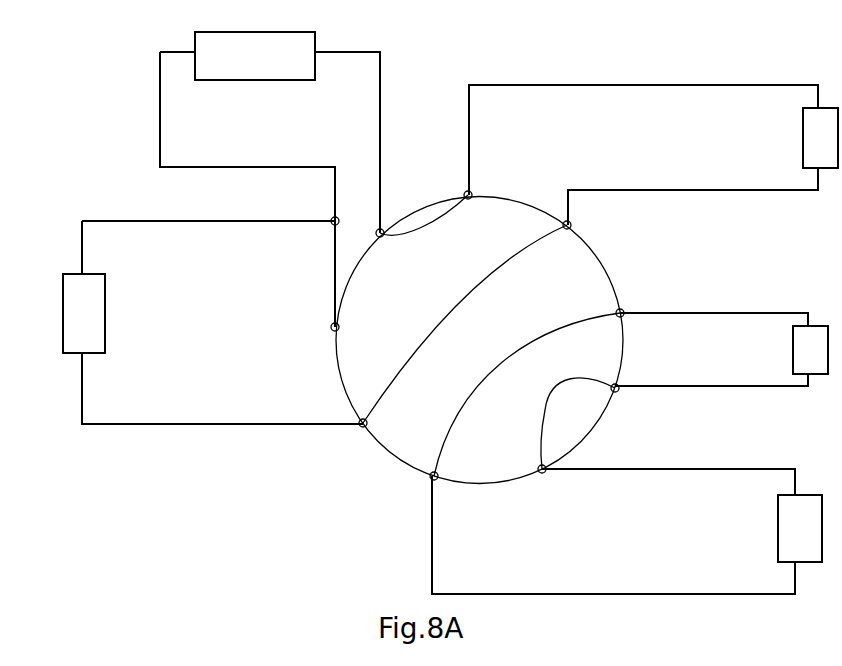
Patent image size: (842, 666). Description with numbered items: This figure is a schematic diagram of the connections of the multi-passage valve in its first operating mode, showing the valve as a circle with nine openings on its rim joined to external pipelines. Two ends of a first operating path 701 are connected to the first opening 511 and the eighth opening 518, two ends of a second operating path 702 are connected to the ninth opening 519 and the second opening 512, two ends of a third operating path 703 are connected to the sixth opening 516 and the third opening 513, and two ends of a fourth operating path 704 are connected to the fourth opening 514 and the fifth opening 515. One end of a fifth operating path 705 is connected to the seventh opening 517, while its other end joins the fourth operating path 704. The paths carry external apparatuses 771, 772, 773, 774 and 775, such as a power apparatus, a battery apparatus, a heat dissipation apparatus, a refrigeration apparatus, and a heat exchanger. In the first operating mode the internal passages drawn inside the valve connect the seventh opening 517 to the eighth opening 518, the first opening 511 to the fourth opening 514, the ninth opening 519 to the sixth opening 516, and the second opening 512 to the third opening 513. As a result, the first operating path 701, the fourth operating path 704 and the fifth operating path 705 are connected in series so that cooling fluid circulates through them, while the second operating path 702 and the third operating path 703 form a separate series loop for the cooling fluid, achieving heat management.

The first opening 511 is at (595, 223).
The second opening 512 is at (639, 404).
The third opening 513 is at (564, 484).
The fourth opening 514 is at (339, 439).
The fifth opening 515 is at (309, 330).
The sixth opening 516 is at (455, 494).
The seventh opening 517 is at (402, 206).
The eighth opening 518 is at (495, 180).
The ninth opening 519 is at (648, 328).
The first operating path 701 is at (610, 82).
The second operating path 702 is at (713, 312).
The third operating path 703 is at (713, 469).
The fourth operating path 704 is at (243, 425).
The fifth operating path 705 is at (160, 153).
The external apparatus 771 is at (802, 128).
The external apparatus 772 is at (793, 351).
The external apparatus 773 is at (778, 531).
The external apparatus 774 is at (98, 318).
The external apparatus 775 is at (195, 33).